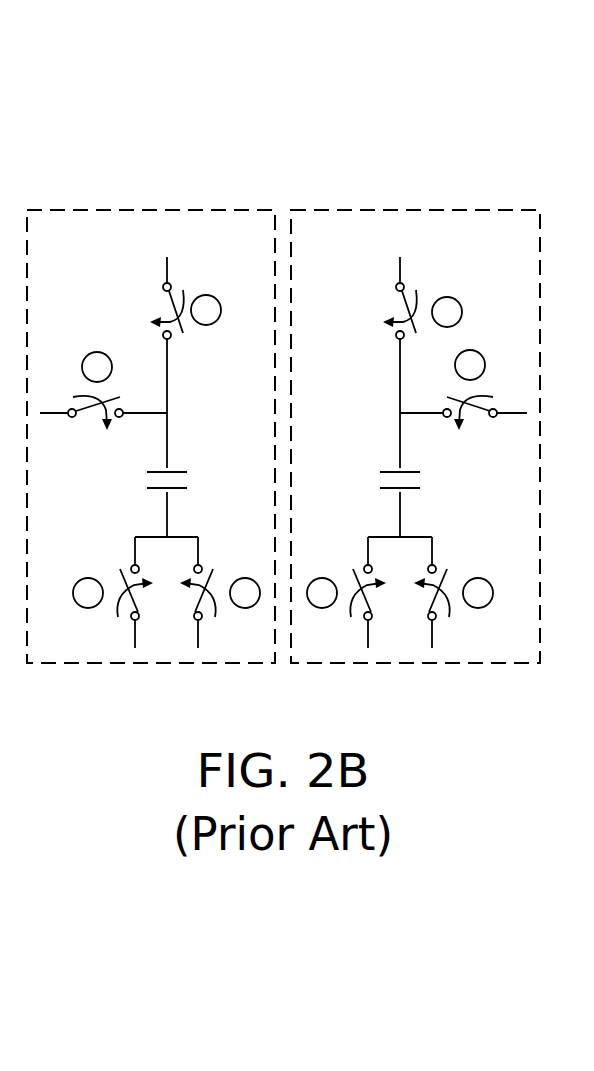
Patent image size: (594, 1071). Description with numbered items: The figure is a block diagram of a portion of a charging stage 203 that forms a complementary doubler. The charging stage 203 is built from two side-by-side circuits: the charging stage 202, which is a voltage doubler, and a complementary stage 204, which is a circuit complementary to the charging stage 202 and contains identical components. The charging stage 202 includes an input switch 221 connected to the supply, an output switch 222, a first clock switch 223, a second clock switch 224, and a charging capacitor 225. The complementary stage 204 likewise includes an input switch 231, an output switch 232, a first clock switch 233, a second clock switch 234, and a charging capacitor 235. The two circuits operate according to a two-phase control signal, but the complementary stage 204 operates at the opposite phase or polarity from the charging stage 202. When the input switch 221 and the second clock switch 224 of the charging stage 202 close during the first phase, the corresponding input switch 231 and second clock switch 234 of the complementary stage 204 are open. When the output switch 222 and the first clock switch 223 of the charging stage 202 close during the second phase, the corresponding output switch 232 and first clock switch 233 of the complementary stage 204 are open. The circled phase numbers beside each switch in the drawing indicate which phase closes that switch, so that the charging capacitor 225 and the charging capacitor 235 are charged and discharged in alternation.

The charging stage 203 is at (245, 113).
The charging stage 202 is at (137, 210).
The complementary stage 204 is at (443, 210).
The input switch 221 is at (165, 318).
The output switch 222 is at (92, 417).
The first clock switch 223 is at (127, 582).
The second clock switch 224 is at (208, 582).
The charging capacitor 225 is at (180, 473).
The input switch 231 is at (398, 318).
The output switch 232 is at (475, 407).
The first clock switch 233 is at (363, 582).
The second clock switch 234 is at (447, 582).
The charging capacitor 235 is at (390, 473).